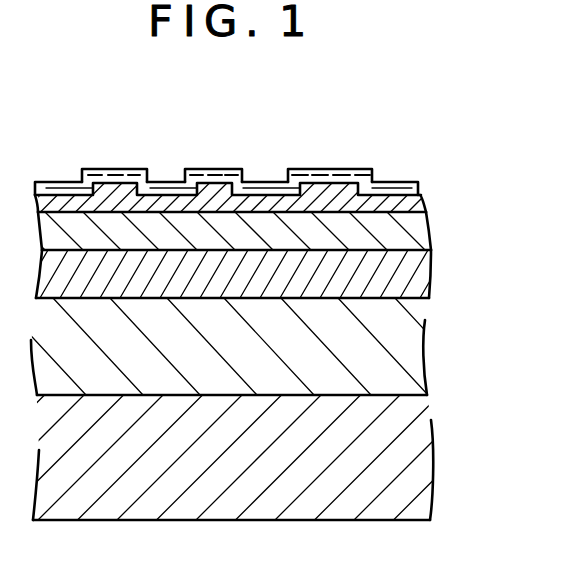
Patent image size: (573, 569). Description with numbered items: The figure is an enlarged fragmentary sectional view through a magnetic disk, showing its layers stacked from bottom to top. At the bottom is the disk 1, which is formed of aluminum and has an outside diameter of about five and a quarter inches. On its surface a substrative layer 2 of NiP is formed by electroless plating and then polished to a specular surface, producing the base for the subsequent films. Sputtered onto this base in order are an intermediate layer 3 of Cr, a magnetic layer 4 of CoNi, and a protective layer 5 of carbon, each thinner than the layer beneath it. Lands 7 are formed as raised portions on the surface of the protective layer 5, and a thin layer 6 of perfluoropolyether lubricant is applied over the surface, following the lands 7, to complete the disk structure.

The disk 1 is at (422, 463).
The substrative layer 2 is at (413, 355).
The intermediate layer 3 is at (421, 283).
The magnetic layer 4 is at (426, 237).
The protective layer 5 is at (413, 207).
The layer of lubricant 6 is at (413, 187).
The lands 7 is at (333, 186).